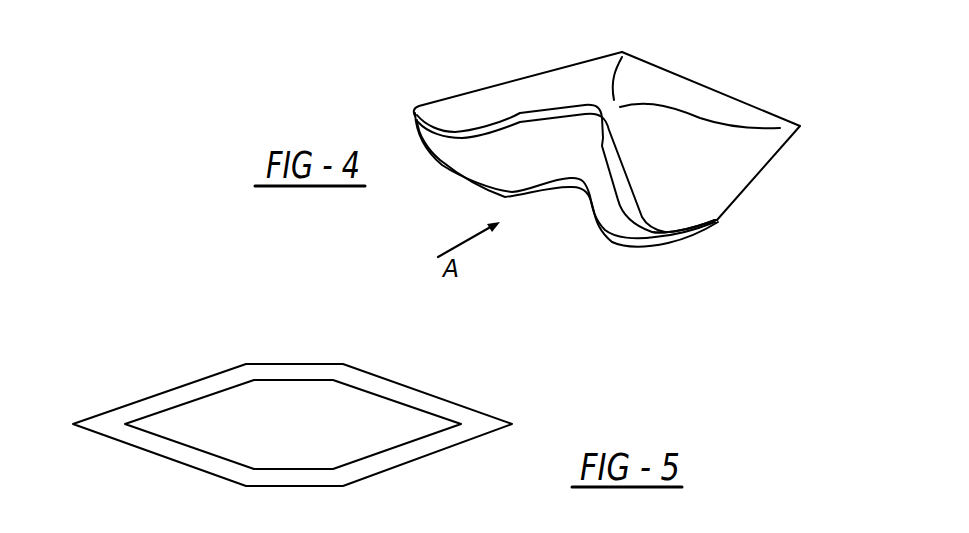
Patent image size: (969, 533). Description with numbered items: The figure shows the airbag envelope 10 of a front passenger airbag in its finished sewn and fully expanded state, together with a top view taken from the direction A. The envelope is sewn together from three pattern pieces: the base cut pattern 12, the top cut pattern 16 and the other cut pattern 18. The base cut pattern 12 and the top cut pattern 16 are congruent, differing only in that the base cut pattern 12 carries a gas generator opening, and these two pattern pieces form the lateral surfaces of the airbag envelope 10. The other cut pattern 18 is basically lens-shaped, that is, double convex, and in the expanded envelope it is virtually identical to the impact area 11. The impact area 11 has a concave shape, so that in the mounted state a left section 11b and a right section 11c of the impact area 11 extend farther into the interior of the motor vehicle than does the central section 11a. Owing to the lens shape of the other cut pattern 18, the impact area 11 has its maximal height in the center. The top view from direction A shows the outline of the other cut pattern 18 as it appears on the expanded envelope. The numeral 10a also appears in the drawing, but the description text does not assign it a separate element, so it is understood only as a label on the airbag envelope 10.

In FIG. 4, the airbag envelope 10 is at (570, 164).
In FIG. 4, the assembly portion 10a is at (337, 7).
In FIG. 4, the impact area 11 is at (548, 168).
In FIG. 4, the central section 11a is at (570, 133).
In FIG. 4, the left section 11b is at (452, 142).
In FIG. 4, the right section 11c is at (618, 223).
In FIG. 4, the base cut pattern 12 is at (698, 100).
In FIG. 4, the top cut pattern 16 is at (698, 235).
In FIG. 4, the other cut pattern 18 is at (578, 168).
In FIG. 5, the other cut pattern 18 is at (297, 417).